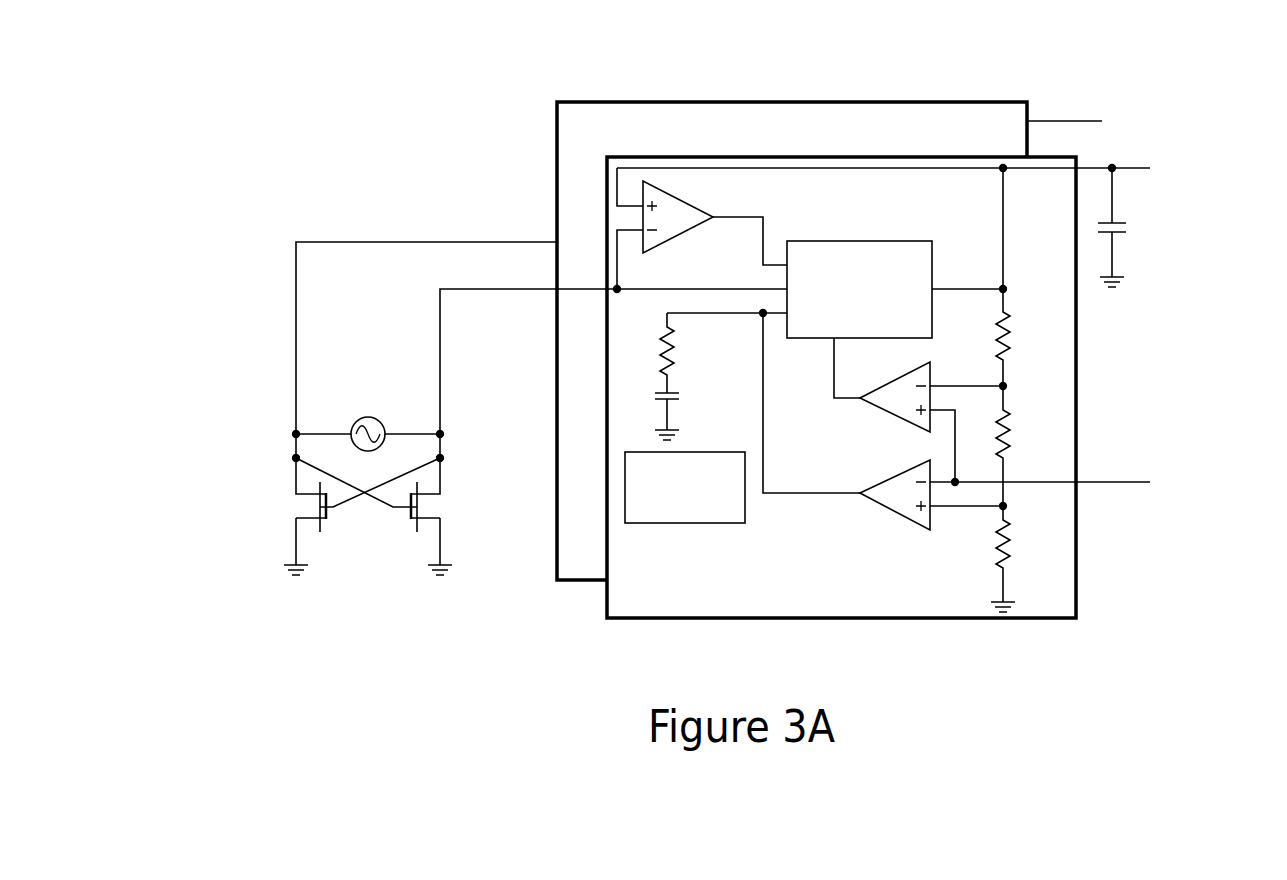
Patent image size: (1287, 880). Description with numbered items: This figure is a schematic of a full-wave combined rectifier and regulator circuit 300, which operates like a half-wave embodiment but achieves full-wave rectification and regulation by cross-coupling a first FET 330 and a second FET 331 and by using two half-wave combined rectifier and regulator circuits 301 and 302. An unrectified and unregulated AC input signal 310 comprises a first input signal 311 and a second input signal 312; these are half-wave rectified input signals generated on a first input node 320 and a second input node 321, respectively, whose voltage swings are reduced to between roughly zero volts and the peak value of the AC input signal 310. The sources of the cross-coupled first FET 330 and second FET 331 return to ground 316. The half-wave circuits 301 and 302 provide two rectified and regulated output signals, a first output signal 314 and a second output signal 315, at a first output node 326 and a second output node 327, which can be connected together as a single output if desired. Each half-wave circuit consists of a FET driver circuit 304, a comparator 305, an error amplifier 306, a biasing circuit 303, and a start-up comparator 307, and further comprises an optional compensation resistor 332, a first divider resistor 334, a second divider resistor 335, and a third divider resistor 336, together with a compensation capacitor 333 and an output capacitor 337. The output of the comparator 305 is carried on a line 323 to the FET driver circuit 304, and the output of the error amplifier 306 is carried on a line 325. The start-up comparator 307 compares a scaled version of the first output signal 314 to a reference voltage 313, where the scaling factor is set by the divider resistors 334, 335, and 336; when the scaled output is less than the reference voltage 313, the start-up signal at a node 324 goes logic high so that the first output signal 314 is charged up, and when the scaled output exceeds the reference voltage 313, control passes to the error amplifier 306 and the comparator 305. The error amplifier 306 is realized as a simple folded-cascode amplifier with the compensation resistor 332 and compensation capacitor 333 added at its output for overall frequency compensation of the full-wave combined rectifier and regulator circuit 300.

The full-wave combined rectifier and regulator circuit 300 is at (688, 342).
The half-wave combined rectifier and regulator circuit 301 is at (651, 608).
The half-wave combined rectifier and regulator circuit 302 is at (602, 133).
The biasing circuit 303 is at (669, 518).
The FET driver circuit 304 is at (875, 312).
The comparator CO1 305 is at (680, 224).
The error amplifier Ae 306 is at (888, 500).
The start-up comparator COs 307 is at (897, 400).
The input signal Vac 310 is at (373, 395).
The input signal Vac1 311 is at (461, 382).
The input signal Vac2 312 is at (272, 383).
The reference voltage Vref1 313 is at (1202, 485).
The output signal Vo1 314 is at (1170, 165).
The output signal Vo2 315 is at (1122, 112).
The ground 316 is at (310, 567).
The first input node 320 is at (442, 436).
The second input node 321 is at (296, 436).
The comparator CO1 output 323 is at (756, 217).
The start-up signal node 324 is at (833, 380).
The error amplifier Ae output 325 is at (793, 492).
The output node 326 is at (1112, 186).
The output node 327 is at (1048, 120).
The first FET Ma 330 is at (455, 517).
The second FET Mb 331 is at (283, 517).
The resistor Rc 332 is at (692, 358).
The capacitor Cc 333 is at (692, 408).
The resistor R1a 334 is at (1023, 340).
The resistor R1b 335 is at (1023, 438).
The resistor R2 336 is at (1027, 540).
The capacitor Cb1 337 is at (1140, 253).